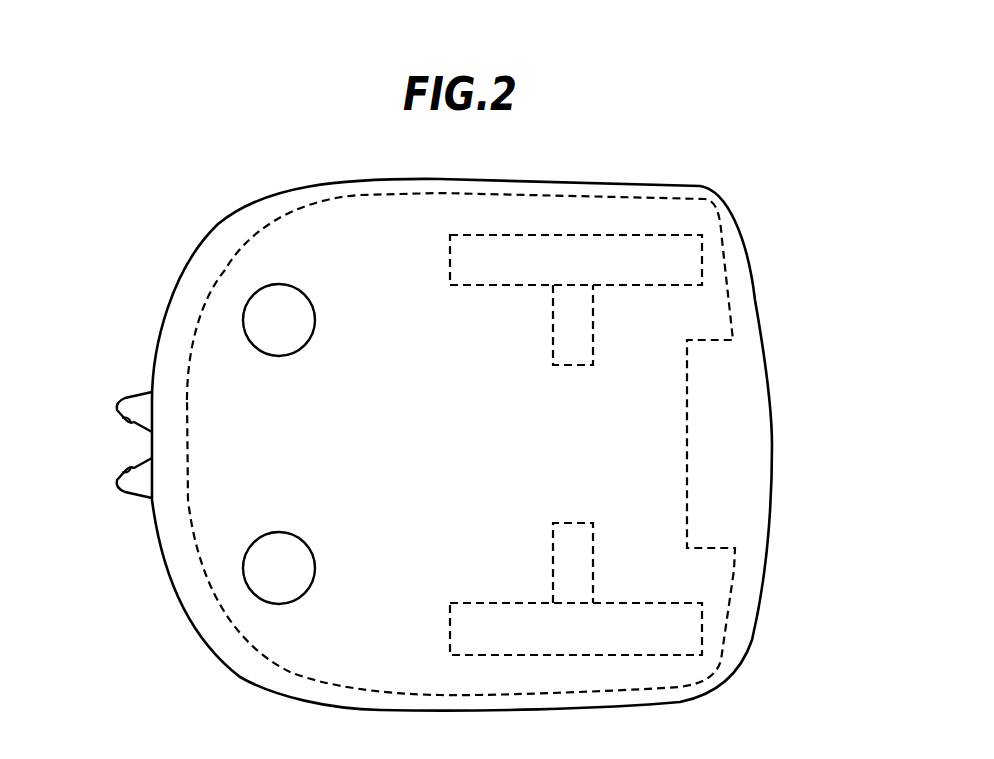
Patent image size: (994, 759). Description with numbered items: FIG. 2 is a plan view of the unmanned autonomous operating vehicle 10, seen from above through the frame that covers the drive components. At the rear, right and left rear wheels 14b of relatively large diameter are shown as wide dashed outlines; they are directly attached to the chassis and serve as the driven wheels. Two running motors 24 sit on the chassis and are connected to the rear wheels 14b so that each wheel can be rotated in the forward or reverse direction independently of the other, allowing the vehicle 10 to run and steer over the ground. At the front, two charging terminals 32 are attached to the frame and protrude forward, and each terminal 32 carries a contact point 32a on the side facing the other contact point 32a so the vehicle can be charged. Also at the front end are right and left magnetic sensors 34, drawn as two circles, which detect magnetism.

The unmanned autonomous operating vehicle 10 is at (699, 177).
The rear wheels 14b is at (500, 286).
The running motors 24 is at (573, 366).
The charging terminals 32 is at (122, 417).
The contact point 32a is at (128, 428).
The magnetic sensors 34 is at (283, 357).